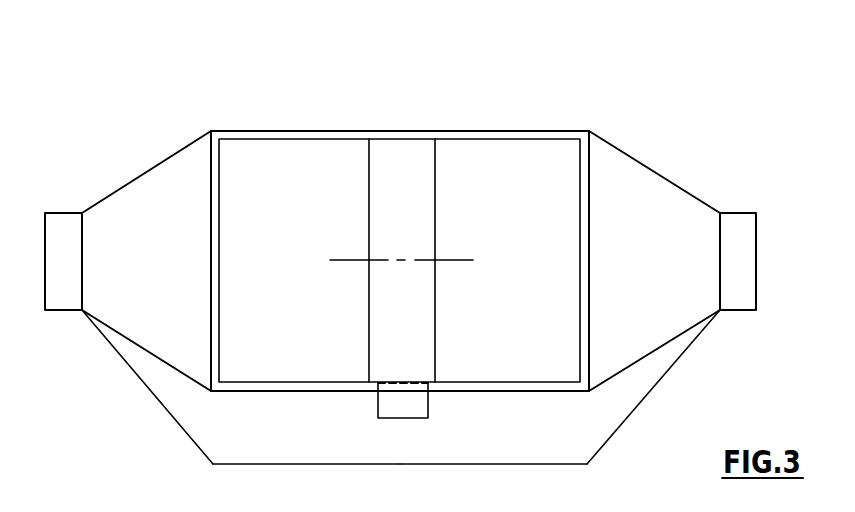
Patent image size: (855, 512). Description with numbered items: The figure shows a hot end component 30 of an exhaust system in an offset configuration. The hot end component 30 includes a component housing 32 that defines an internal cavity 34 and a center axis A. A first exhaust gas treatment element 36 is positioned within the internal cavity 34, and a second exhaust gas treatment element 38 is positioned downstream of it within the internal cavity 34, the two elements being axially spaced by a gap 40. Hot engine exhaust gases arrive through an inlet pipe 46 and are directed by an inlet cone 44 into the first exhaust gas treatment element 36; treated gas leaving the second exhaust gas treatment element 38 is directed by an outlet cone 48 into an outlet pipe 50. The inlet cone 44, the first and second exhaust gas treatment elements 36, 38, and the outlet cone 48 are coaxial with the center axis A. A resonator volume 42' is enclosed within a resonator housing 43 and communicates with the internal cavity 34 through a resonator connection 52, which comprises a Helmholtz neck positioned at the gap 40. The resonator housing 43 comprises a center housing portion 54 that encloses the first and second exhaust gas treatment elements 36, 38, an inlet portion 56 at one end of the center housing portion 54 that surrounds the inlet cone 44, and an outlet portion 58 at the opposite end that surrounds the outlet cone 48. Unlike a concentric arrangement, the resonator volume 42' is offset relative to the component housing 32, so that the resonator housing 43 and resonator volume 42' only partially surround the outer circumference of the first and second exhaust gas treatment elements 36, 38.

The hot end component 30 is at (628, 85).
The component housing 32 is at (589, 131).
The internal cavity 34 is at (498, 388).
The first exhaust gas treatment element 36 is at (296, 262).
The second exhaust gas treatment element 38 is at (548, 261).
The gap 40 is at (400, 167).
The center axis A is at (450, 260).
The resonator volume 42' is at (617, 452).
The resonator housing 43 is at (250, 465).
The inlet cone 44 is at (163, 362).
The inlet pipe 46 is at (60, 310).
The outlet cone 48 is at (670, 180).
The outlet pipe 50 is at (737, 310).
The resonator connection 52 is at (378, 400).
The center housing portion 54 is at (417, 465).
The inlet portion 56 is at (183, 430).
The outlet portion 58 is at (665, 372).